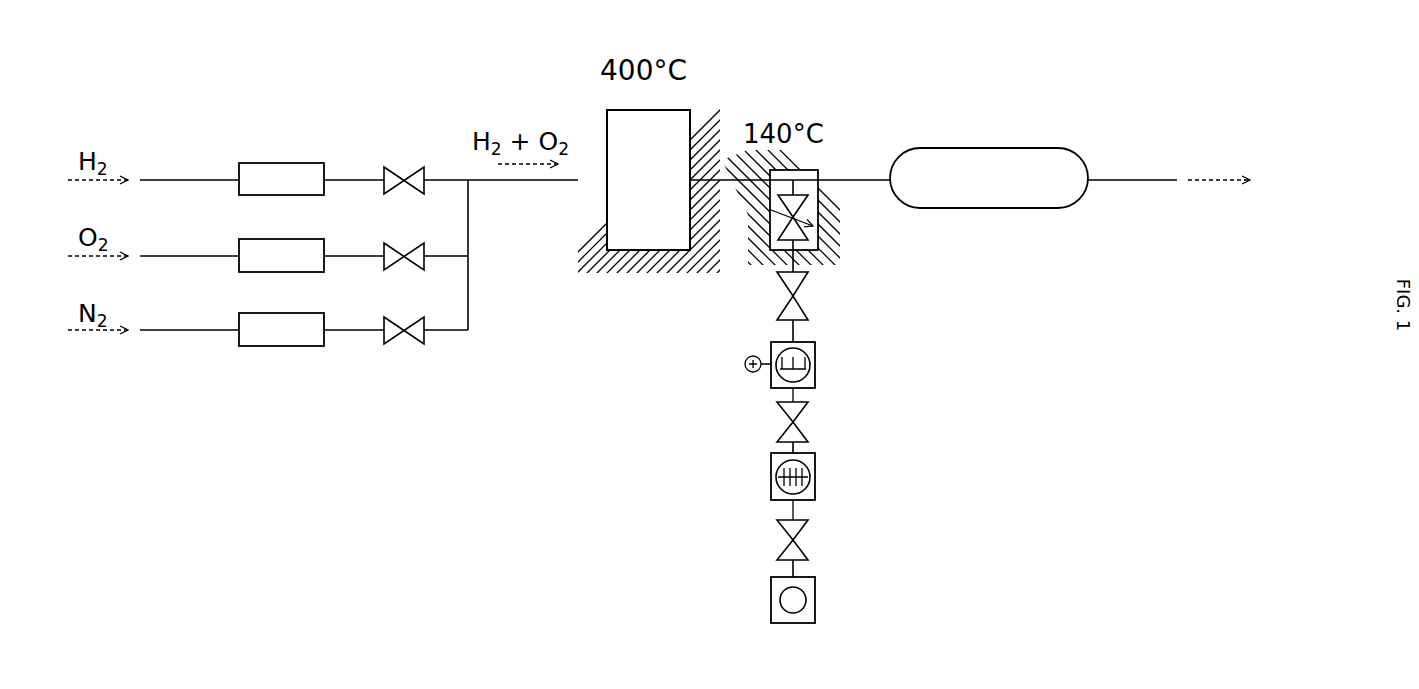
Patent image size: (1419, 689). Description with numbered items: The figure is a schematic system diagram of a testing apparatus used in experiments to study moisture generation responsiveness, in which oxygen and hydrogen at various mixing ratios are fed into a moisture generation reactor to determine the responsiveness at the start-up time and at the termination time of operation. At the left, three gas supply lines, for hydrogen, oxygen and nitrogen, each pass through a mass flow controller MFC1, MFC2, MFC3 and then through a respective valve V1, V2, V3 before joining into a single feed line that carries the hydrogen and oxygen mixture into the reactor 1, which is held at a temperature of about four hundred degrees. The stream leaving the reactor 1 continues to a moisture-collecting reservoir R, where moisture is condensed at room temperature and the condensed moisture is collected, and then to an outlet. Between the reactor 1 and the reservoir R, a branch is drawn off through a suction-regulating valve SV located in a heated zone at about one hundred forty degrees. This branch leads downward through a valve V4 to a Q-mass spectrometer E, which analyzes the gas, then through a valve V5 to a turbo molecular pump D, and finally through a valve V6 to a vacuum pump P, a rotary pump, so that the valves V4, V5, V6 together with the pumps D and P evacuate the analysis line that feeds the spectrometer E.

The reactor 1 is at (672, 143).
The valve V1 is at (396, 171).
The valve V2 is at (396, 247).
The valve V3 is at (396, 321).
The valve V4 is at (797, 289).
The valve V5 is at (799, 411).
The valve V6 is at (799, 532).
The suction-regulating valve SV is at (805, 228).
The Q-mass spectrometer E is at (815, 360).
The turbo molecular pump D is at (815, 476).
The vacuum pump P is at (815, 596).
The moisture-collecting reservoir R is at (1013, 148).
The mass flow controller MFC1 is at (281, 179).
The mass flow controller MFC2 is at (281, 255).
The mass flow controller MFC3 is at (281, 329).